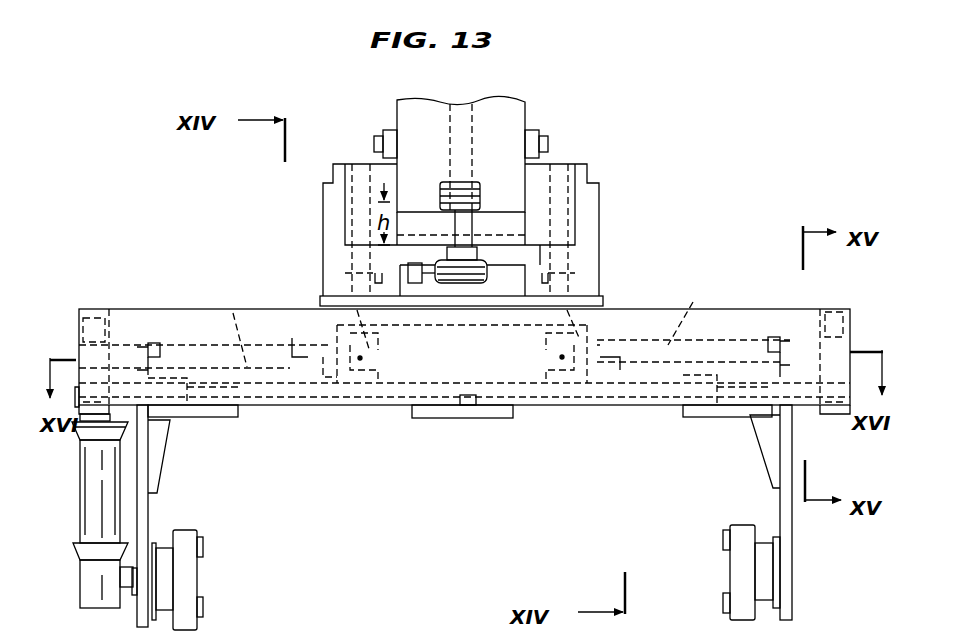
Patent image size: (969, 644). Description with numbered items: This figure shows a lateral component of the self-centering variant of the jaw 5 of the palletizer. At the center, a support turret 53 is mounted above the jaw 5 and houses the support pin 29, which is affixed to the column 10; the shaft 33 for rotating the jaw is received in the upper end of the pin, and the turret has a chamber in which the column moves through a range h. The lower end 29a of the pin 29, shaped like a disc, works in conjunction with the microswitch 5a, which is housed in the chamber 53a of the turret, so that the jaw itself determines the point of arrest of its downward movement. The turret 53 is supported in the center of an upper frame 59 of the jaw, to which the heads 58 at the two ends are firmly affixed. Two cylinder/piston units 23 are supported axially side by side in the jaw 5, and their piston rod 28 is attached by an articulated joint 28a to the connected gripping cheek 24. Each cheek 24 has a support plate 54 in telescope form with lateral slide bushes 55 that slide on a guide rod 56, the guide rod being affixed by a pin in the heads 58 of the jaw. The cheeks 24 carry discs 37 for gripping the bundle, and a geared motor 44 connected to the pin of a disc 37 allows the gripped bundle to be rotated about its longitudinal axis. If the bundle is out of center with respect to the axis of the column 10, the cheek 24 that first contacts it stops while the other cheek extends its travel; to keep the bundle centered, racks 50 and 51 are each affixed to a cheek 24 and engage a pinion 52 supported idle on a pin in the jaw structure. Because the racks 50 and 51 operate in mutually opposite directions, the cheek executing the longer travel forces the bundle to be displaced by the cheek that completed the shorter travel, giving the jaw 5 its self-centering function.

The jaw 5 is at (626, 240).
The microswitch 5a is at (415, 285).
The column 10 is at (517, 111).
The cylinder/piston units 23 is at (352, 380).
The gripping cheeks 24 is at (147, 517).
The piston rod 28 is at (233, 310).
The articulated joint 28a is at (155, 343).
The support pin 29 is at (466, 223).
The lower end of the pin 29a is at (470, 285).
The shaft 33 is at (461, 110).
The discs 37 is at (187, 582).
The geared motor 44 is at (90, 530).
The rack 50 is at (428, 404).
The rack 51 is at (642, 398).
The pinion 52 is at (477, 405).
The support turret 53 is at (610, 190).
The chamber 53a is at (520, 278).
The support plate 54 is at (158, 443).
The slide bushes 55 is at (193, 420).
The guide rod 56 is at (282, 406).
The heads of the jaw 58 is at (92, 367).
The upper frame 59 is at (120, 310).